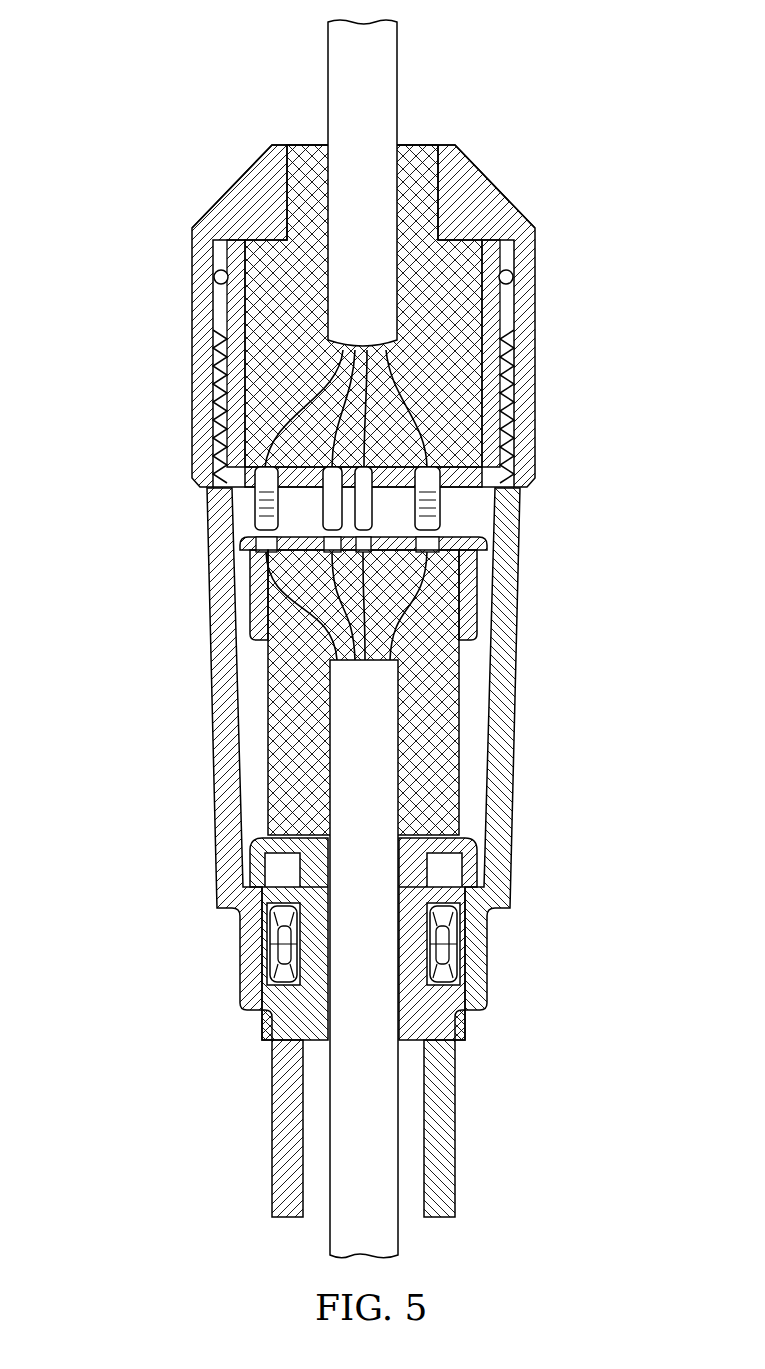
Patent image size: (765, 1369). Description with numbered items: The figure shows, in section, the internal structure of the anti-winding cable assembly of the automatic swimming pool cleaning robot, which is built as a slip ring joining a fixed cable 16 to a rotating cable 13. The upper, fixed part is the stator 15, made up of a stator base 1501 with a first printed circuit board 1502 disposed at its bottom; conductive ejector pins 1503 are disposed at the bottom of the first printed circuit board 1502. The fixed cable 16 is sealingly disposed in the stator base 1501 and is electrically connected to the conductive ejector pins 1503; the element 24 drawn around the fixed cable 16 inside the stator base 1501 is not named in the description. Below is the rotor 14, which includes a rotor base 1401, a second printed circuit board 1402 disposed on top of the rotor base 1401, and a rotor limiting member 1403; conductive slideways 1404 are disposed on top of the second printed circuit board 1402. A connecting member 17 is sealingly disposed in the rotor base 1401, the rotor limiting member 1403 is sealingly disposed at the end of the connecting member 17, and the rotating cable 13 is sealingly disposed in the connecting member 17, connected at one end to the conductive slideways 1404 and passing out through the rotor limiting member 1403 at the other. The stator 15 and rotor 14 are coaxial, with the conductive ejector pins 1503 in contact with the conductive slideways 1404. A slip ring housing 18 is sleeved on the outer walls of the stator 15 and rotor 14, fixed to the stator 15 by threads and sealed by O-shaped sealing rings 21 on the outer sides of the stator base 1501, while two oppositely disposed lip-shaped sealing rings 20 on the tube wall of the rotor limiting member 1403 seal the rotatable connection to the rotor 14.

The rotating cable 13 is at (400, 1090).
The rotor 14 is at (465, 690).
The stator 15 is at (228, 187).
The fixed cable 16 is at (380, 72).
The connecting member 17 is at (450, 745).
The slip ring housing 18 is at (210, 458).
The lip-shaped sealing ring 20 is at (455, 925).
The O-shaped sealing ring 21 is at (513, 272).
The insulating body 24 is at (455, 355).
The rotor base 1401 is at (472, 623).
The second printed circuit board 1402 is at (473, 545).
The rotor limiting member 1403 is at (317, 977).
The conductive slideway 1404 is at (268, 539).
The stator base 1501 is at (455, 178).
The first printed circuit board 1502 is at (457, 482).
The conductive ejector pin 1503 is at (252, 513).